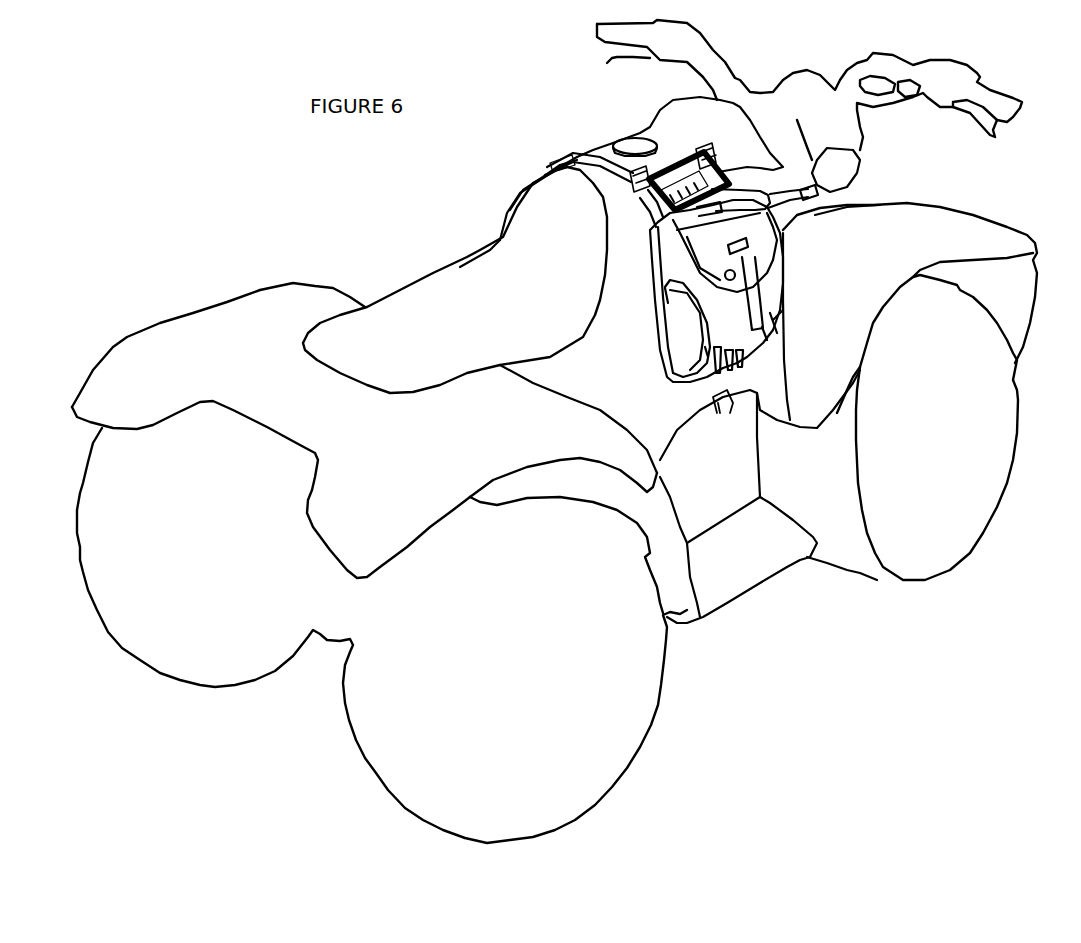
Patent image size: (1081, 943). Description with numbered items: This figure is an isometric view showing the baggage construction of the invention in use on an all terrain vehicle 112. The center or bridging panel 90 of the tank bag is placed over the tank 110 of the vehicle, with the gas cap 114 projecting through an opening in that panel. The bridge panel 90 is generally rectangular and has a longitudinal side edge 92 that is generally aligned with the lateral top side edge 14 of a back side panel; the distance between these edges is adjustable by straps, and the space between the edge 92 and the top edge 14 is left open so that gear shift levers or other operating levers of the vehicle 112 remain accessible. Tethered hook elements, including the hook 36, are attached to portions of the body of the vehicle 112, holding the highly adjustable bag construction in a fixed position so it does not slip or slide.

The lateral top side edge 14 is at (783, 170).
The hook 36 is at (858, 148).
The center or bridging panel 90 is at (600, 147).
The longitudinal side edge 92 is at (673, 163).
The tank 110 is at (620, 205).
The all terrain vehicle 112 is at (967, 233).
The gas cap 114 is at (622, 142).